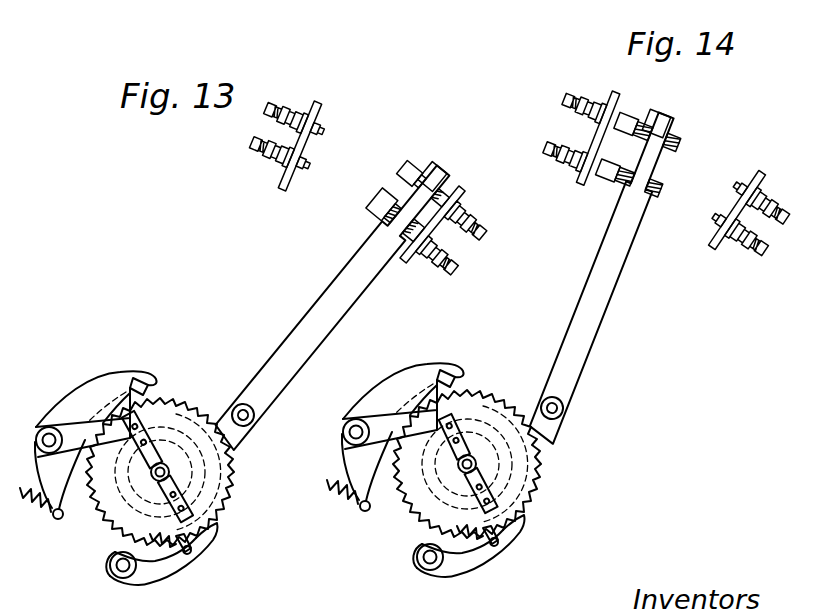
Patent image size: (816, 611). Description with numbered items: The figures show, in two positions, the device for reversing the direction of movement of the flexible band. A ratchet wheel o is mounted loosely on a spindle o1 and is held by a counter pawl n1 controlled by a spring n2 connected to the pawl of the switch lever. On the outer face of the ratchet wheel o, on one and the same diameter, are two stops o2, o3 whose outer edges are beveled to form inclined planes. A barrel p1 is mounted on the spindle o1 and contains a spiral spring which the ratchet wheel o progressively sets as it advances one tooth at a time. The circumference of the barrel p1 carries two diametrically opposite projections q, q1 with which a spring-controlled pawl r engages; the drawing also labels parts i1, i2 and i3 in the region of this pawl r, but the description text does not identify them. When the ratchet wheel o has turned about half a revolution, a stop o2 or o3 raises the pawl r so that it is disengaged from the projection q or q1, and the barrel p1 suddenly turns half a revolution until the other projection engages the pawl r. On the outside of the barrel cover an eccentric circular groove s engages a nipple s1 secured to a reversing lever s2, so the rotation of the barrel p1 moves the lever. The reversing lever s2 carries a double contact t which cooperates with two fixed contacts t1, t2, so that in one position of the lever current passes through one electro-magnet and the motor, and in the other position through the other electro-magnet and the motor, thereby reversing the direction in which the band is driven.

In FIG. 13, the ratchet wheel o is at (178, 472).
In FIG. 14, the ratchet wheel o is at (491, 464).
In FIG. 13, the spindle o1 is at (198, 440).
In FIG. 14, the spindle o1 is at (507, 426).
In FIG. 13, the stop o2 is at (160, 419).
In FIG. 14, the stop o2 is at (467, 417).
In FIG. 13, the stop o3 is at (130, 511).
In FIG. 14, the stop o3 is at (469, 516).
In FIG. 13, the barrel p1 is at (196, 399).
In FIG. 14, the barrel p1 is at (488, 390).
In FIG. 13, the eccentric circular groove s is at (173, 419).
In FIG. 14, the eccentric circular groove s is at (487, 406).
In FIG. 13, the nipple s1 is at (212, 498).
In FIG. 14, the nipple s1 is at (525, 491).
In FIG. 13, the reversing lever s2 is at (328, 332).
In FIG. 14, the reversing lever s2 is at (590, 315).
In FIG. 13, the pawl r is at (96, 391).
In FIG. 14, the pawl r is at (403, 397).
In FIG. 13, the projection q is at (135, 360).
In FIG. 14, the projection q is at (500, 546).
In FIG. 13, the projection q1 is at (201, 561).
In FIG. 14, the projection q1 is at (436, 354).
In FIG. 13, the pawl spring i1 is at (35, 522).
In FIG. 14, the pawl spring i1 is at (329, 472).
In FIG. 13, the pawl pivot i2 is at (49, 408).
In FIG. 14, the pawl pivot i2 is at (347, 414).
In FIG. 13, the pawl tail i3 is at (60, 491).
In FIG. 14, the pawl tail i3 is at (367, 487).
In FIG. 13, the counter pawl n1 is at (161, 561).
In FIG. 14, the counter pawl n1 is at (458, 557).
In FIG. 13, the spring n2 is at (136, 579).
In FIG. 14, the spring n2 is at (412, 552).
In FIG. 13, the double contact t is at (403, 175).
In FIG. 14, the double contact t is at (657, 150).
In FIG. 13, the fixed contact t1 is at (443, 259).
In FIG. 14, the fixed contact t1 is at (703, 227).
In FIG. 13, the fixed contact t2 is at (307, 187).
In FIG. 14, the fixed contact t2 is at (612, 177).